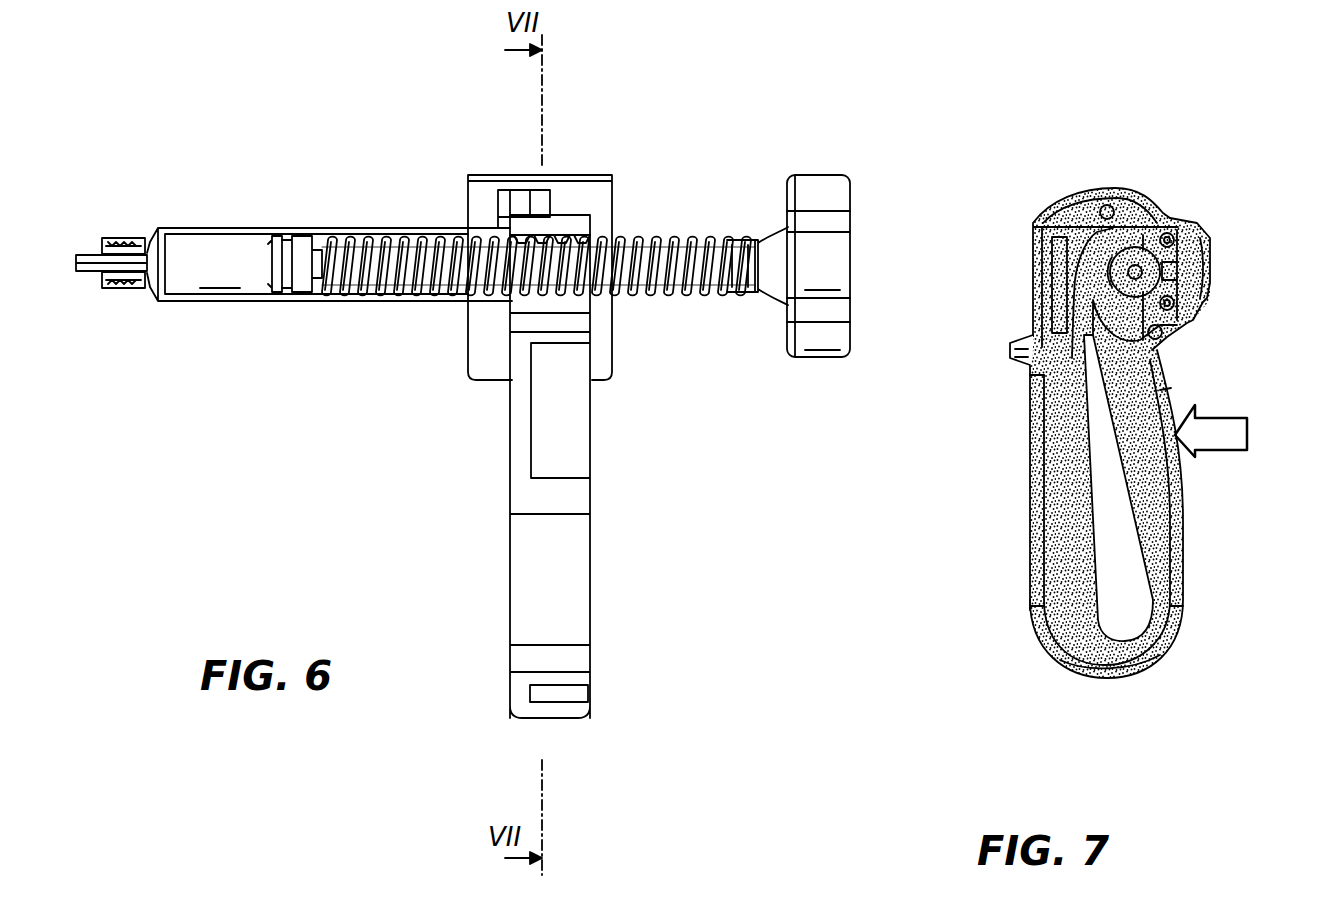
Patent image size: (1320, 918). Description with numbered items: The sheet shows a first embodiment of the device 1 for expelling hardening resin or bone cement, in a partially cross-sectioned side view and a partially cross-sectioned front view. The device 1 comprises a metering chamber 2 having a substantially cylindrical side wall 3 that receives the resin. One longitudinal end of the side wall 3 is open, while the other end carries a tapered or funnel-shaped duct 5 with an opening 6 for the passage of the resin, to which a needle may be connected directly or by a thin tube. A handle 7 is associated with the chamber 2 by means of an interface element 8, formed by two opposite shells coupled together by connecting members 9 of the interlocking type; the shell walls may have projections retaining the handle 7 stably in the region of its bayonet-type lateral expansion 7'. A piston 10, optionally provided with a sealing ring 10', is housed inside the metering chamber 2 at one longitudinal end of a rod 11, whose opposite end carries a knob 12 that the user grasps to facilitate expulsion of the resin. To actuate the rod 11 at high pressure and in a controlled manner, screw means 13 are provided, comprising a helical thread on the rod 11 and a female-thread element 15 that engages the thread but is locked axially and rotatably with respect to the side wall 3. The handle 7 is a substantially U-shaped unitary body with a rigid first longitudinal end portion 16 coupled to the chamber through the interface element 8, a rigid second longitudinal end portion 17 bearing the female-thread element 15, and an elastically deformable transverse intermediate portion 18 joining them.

In FIG. 6, the device 1 is at (732, 110).
In FIG. 6, the metering chamber 2 is at (341, 215).
In FIG. 6, the side wall 3 is at (240, 227).
In FIG. 6, the funnel-shaped duct 5 is at (100, 250).
In FIG. 6, the opening 6 is at (76, 262).
In FIG. 6, the handle 7 is at (492, 466).
In FIG. 7, the handle 7 is at (946, 635).
In FIG. 7, the bayonet-type lateral expansion 7' is at (989, 381).
In FIG. 7, the interface element 8 is at (1080, 192).
In FIG. 7, the connecting members 9 is at (1190, 232).
In FIG. 6, the piston 10 is at (301, 312).
In FIG. 7, the piston 10 is at (1162, 225).
In FIG. 6, the sealing ring 10' is at (246, 307).
In FIG. 6, the rod 11 is at (710, 226).
In FIG. 6, the knob 12 is at (845, 180).
In FIG. 7, the knob 12 is at (1210, 264).
In FIG. 6, the screw means 13 is at (594, 198).
In FIG. 6, the female-thread element 15 is at (525, 218).
In FIG. 7, the first longitudinal end portion 16 is at (1035, 510).
In FIG. 7, the second longitudinal end portion 17 is at (1183, 487).
In FIG. 7, the transverse intermediate portion 18 is at (1100, 665).